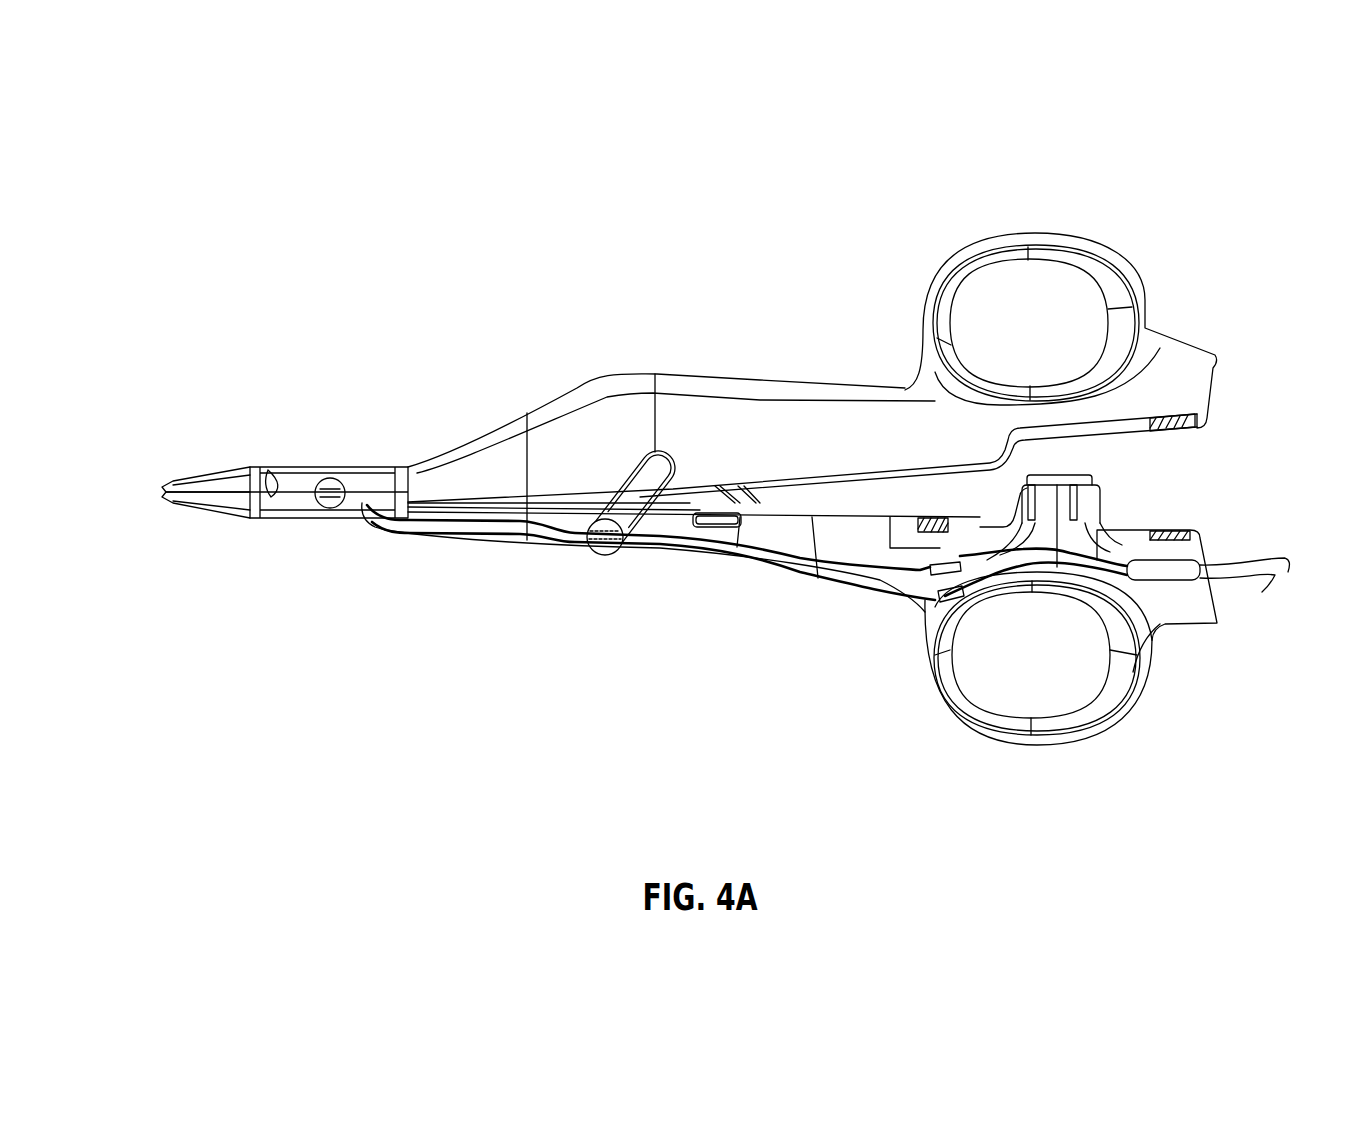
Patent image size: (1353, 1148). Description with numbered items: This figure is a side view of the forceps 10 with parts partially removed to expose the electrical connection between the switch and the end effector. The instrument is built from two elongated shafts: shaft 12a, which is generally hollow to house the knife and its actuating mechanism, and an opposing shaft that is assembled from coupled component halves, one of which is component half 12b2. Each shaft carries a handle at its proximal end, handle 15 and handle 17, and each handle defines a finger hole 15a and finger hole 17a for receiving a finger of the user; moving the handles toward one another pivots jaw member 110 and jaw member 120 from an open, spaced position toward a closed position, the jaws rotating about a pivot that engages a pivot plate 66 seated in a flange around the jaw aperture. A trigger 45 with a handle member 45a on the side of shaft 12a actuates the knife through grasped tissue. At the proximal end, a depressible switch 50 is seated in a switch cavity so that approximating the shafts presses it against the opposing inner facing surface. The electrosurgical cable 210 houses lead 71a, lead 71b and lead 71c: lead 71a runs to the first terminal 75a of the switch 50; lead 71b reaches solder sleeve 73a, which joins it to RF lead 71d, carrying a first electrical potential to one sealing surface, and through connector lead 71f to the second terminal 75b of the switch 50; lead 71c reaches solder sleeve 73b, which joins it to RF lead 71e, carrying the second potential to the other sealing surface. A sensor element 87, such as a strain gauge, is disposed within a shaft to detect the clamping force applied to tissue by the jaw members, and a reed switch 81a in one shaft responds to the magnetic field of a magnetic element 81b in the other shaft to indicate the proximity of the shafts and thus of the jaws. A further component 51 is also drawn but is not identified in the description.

The forceps 10 is at (724, 118).
The shaft 12a is at (673, 383).
The component half of shaft 12b2 is at (683, 560).
The handle 15 is at (1095, 738).
The finger hole 15a is at (1011, 669).
The handle 17 is at (1092, 248).
The finger hole 17a is at (1011, 334).
The trigger 45 is at (635, 448).
The handle member 45a is at (603, 540).
The depressible switch 50 is at (1057, 476).
The pivot pin 51 is at (737, 547).
The pivot plate 66 is at (347, 486).
The lead 71a is at (1095, 520).
The lead 71b is at (1100, 540).
The lead 71c is at (1165, 630).
The RF lead 71d is at (818, 578).
The RF lead 71e is at (772, 568).
The connector lead 71f is at (955, 516).
The solder sleeve 73a is at (940, 575).
The solder sleeve 73b is at (940, 600).
The first terminal 75a is at (1095, 492).
The second terminal 75b is at (1018, 514).
The reed switch 81a is at (1208, 410).
The magnetic element 81b is at (1178, 530).
The sensor element 87 is at (927, 533).
The jaw member 110 is at (196, 456).
The jaw member 120 is at (196, 526).
The electrosurgical cable 210 is at (1232, 560).